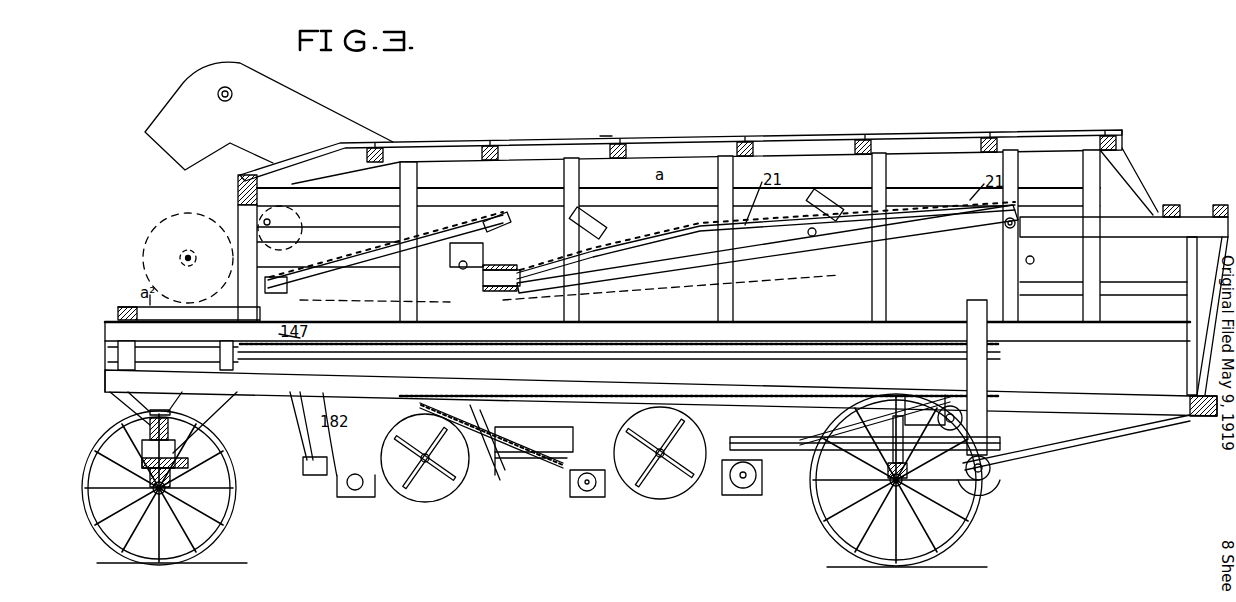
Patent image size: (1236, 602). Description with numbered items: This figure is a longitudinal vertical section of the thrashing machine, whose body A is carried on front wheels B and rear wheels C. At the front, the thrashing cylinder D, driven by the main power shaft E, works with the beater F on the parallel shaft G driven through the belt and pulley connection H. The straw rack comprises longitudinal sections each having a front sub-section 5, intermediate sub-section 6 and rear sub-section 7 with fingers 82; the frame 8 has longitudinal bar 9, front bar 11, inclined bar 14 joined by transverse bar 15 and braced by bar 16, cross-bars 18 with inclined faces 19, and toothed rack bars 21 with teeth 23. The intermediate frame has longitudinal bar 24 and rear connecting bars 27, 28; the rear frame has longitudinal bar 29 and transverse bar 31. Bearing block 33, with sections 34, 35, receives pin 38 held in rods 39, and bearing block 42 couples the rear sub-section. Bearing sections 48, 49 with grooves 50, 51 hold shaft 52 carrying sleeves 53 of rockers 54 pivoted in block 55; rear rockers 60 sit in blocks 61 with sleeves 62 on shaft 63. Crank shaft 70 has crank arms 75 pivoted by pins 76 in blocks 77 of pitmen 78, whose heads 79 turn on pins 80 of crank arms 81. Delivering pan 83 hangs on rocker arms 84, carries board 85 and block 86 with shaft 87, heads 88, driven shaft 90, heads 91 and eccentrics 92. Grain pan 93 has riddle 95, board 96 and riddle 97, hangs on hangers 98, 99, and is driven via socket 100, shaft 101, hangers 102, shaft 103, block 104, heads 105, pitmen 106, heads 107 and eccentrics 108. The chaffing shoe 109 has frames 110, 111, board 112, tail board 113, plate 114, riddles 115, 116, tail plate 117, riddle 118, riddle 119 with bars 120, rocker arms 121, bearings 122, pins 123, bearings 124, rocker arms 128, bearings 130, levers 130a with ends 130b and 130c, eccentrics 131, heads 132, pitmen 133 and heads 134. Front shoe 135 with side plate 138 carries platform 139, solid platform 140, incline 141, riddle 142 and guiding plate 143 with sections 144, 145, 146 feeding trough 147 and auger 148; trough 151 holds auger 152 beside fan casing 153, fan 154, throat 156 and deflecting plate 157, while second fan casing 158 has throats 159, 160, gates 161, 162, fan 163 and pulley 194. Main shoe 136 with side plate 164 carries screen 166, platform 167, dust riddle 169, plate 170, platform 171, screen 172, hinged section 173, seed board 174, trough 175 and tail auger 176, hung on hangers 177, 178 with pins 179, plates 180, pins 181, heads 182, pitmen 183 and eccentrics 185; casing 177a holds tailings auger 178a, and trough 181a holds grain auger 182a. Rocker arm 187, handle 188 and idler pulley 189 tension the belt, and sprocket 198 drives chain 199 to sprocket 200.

The body A is at (606, 135).
The front wheels B is at (232, 518).
The rear wheels C is at (985, 522).
The thrashing cylinder D is at (178, 232).
The main power shaft E is at (190, 255).
The beater F is at (300, 218).
The parallel shaft G is at (270, 226).
The belt and pulley connection H is at (200, 270).
The front sub-section 5 is at (440, 230).
The intermediate sub-section 6 is at (655, 233).
The rear sub-section 7 is at (920, 225).
The rectangular frame 8 is at (505, 245).
The longitudinal bar 9 is at (335, 300).
The front transverse connecting bar 11 is at (248, 288).
The diagonally-upwardly-extending bar 14 is at (490, 220).
The transverse bar 15 is at (510, 222).
The inclined bracing bar 16 is at (470, 225).
The cross-bars 18 is at (322, 300).
The inclined faces 19 is at (308, 300).
The rack bar 21 is at (320, 280).
The teeth 23 is at (290, 275).
The longitudinal bar 24 is at (680, 262).
The rear lateral connecting bar 27 is at (740, 330).
The rear lateral connecting bar 28 is at (805, 268).
The longitudinal bar 29 is at (905, 255).
The transverse bar 31 is at (855, 235).
The bearing block 33 is at (485, 258).
The bearing section 34 is at (440, 278).
The bearing section 35 is at (460, 278).
The pin 38 is at (415, 245).
The longitudinal rod 39 is at (575, 228).
The longitudinal bearing block 42 is at (815, 220).
The upper bearing section 48 is at (238, 300).
The lower bearing section 49 is at (238, 318).
The bearing groove 50 is at (290, 295).
The bearing groove 51 is at (262, 328).
The shaft 52 is at (345, 318).
The lower sleeve 53 is at (318, 352).
The rocker 54 is at (205, 300).
The front transverse bearing block 55 is at (268, 280).
The rear rocker 60 is at (1030, 240).
The bearing block 61 is at (1025, 230).
The sleeve 62 is at (1040, 262).
The transverse shaft 63 is at (1030, 270).
The second crank shaft 70 is at (760, 330).
The crank arm 75 is at (790, 328).
The transverse pin 76 is at (790, 260).
The block 77 is at (825, 278).
The pitman 78 is at (600, 322).
The head 79 is at (485, 315).
The transverse pin 80 is at (430, 315).
The crank arm 81 is at (470, 348).
The fingers 82 is at (1020, 220).
The return and delivering pan 83 is at (955, 280).
The vertical rocker arms 84 is at (975, 280).
The inclined board 85 is at (1080, 238).
The transverse block 86 is at (828, 330).
The shaft 87 is at (845, 330).
The head 88 is at (870, 348).
The driven shaft 90 is at (945, 320).
The head 91 is at (935, 320).
The eccentric 92 is at (960, 322).
The grain pan 93 is at (195, 345).
The riddle 95 is at (650, 340).
The solid transverse board 96 is at (720, 330).
The riddle 97 is at (755, 345).
The hanger 98 is at (800, 342).
The hanger 99 is at (575, 320).
The transverse bearing socket 100 is at (195, 316).
The shaft 101 is at (200, 375).
The hangers 102 is at (250, 360).
The shaft 103 is at (280, 415).
The bearing block 104 is at (292, 360).
The head 105 is at (295, 435).
The pitman 106 is at (352, 355).
The socketed head 107 is at (425, 348).
The eccentric 108 is at (400, 310).
The chaffing shoe 109 is at (500, 343).
The upper frame 110 is at (590, 368).
The lower frame 111 is at (650, 368).
The inclined board 112 is at (570, 345).
The tail board 113 is at (975, 360).
The inclined retaining plate 114 is at (470, 370).
The riddle 115 is at (690, 366).
The riddle 116 is at (770, 366).
The foraminous tail plate 117 is at (905, 370).
The front riddle 118 is at (575, 402).
The riddle 119 is at (830, 425).
The inclined bars 120 is at (805, 368).
The rocker arms 121 is at (880, 420).
The bearings 122 is at (890, 350).
The lateral pins 123 is at (800, 420).
The bearings 124 is at (770, 450).
The rocker arms 128 is at (540, 462).
The bearings 130 is at (540, 436).
The connecting lever 130a is at (540, 412).
The lever end 130b is at (580, 458).
The chute 130c is at (470, 490).
The eccentric 131 is at (530, 284).
The head 132 is at (575, 298).
The pitman 133 is at (520, 365).
The head 134 is at (520, 372).
The front separating shoe 135 is at (655, 360).
The main shoe 136 is at (990, 392).
The angular side plate 138 is at (690, 408).
The upper platform 139 is at (665, 405).
The solid platform 140 is at (640, 450).
The incline 141 is at (700, 448).
The wire mesh riddle 142 is at (462, 402).
The inclined guiding plate 143 is at (330, 395).
The upper solid section 144 is at (430, 452).
The lower solid section 145 is at (435, 455).
The screen section 146 is at (510, 480).
The conveyor trough 147 is at (580, 500).
The red top seed auger 148 is at (605, 495).
The trough 151 is at (358, 500).
The timothy auger 152 is at (345, 500).
The fan casing 153 is at (395, 495).
The fan 154 is at (445, 520).
The throat 156 is at (375, 455).
The curved deflecting plate 157 is at (345, 435).
The second fan casing 158 is at (725, 495).
The throat 159 is at (620, 480).
The throat 160 is at (750, 420).
The gate 161 is at (545, 490).
The gate 162 is at (725, 455).
The fan 163 is at (680, 505).
The angular side plate 164 is at (455, 328).
The top screen 166 is at (975, 382).
The inclined platform 167 is at (900, 450).
The dust riddle 169 is at (730, 438).
The delivering plate 170 is at (760, 495).
The inclined platform 171 is at (850, 470).
The weed and buckhorn screen 172 is at (775, 510).
The hinged section 173 is at (770, 480).
The seed board 174 is at (860, 500).
The trough 175 is at (1010, 475).
The tail auger 176 is at (1000, 490).
The hangers 177 is at (1020, 368).
The upper auger casing 177a is at (1000, 428).
The hangers 178 is at (745, 405).
The tailings auger 178a is at (1000, 435).
The front pins 179 is at (745, 495).
The bearing plates 180 is at (790, 390).
The rear pins 181 is at (770, 420).
The grain auger trough 181a is at (785, 535).
The head 182 is at (740, 368).
The grain auger 182a is at (745, 535).
The pitman 183 is at (870, 370).
The eccentric 185 is at (980, 340).
The rocker arm 187 is at (375, 345).
The slotted handle 188 is at (285, 372).
The idler pulley 189 is at (910, 318).
The pulley 194 is at (930, 358).
The sprocket 198 is at (965, 416).
The chain 199 is at (1050, 445).
The sprocket 200 is at (995, 468).